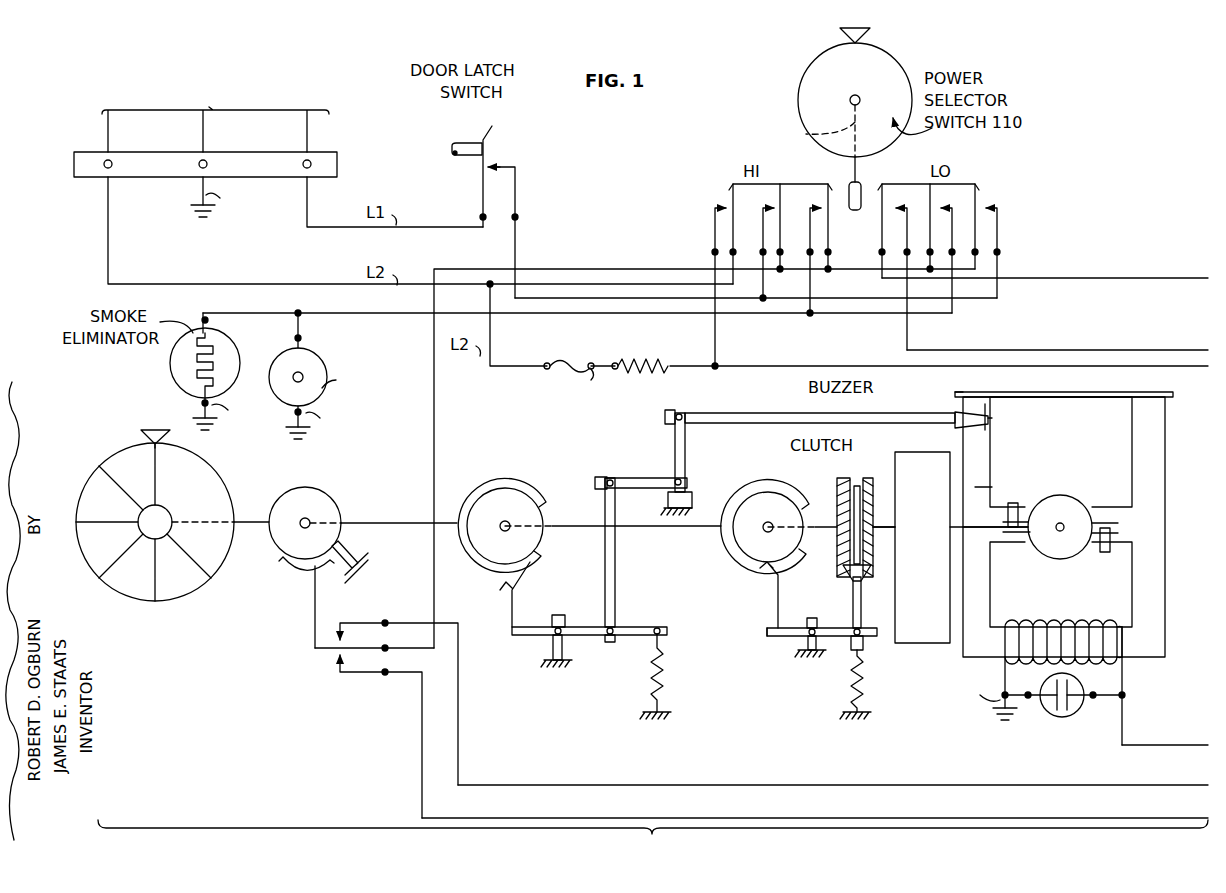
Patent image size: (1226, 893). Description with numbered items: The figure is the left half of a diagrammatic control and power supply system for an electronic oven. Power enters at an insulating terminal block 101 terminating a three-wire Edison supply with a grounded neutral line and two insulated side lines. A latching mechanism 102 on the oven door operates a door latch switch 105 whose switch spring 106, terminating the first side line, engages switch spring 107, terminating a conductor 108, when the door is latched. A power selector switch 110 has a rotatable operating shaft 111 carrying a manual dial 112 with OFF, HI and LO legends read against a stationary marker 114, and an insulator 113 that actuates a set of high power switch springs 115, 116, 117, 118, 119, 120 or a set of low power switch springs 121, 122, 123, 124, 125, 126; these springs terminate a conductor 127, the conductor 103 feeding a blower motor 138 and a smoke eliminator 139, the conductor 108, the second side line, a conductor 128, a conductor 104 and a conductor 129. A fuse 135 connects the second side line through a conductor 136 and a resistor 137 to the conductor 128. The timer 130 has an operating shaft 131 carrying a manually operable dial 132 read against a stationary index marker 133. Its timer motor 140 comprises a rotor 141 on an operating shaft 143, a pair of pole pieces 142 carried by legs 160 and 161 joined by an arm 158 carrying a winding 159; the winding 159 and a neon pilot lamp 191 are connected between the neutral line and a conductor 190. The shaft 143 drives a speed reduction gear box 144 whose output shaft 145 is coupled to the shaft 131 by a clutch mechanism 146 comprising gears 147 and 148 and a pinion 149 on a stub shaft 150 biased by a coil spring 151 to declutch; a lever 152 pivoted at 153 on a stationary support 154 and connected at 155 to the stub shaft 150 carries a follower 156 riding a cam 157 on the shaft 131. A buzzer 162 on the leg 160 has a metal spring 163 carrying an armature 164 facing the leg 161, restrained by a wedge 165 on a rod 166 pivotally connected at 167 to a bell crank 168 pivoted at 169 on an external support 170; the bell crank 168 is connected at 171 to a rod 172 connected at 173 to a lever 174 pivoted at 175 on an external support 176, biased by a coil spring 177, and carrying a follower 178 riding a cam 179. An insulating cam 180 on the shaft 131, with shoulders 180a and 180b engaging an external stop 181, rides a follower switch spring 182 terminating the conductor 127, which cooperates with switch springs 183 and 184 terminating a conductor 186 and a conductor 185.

The insulating terminal block 101 is at (74, 165).
The latching mechanism 102 is at (454, 144).
The conductor 103 is at (388, 313).
The conductor 104 is at (1128, 279).
The door latch switch 105 is at (492, 152).
The switch spring 106 is at (483, 195).
The switch spring 107 is at (516, 205).
The conductor 108 is at (516, 255).
The power selector switch 110 is at (849, 115).
The rotatable operating shaft 111 is at (806, 134).
The manual dial 112 is at (815, 63).
The insulator 113 is at (848, 190).
The stationary marker 114 is at (872, 30).
The high power switch spring 115 is at (836, 226).
The high power switch spring 116 is at (818, 260).
The high power switch spring 117 is at (788, 226).
The high power switch spring 118 is at (771, 254).
The high power switch spring 119 is at (741, 234).
The high power switch spring 120 is at (723, 287).
The low power switch spring 121 is at (890, 231).
The low power switch spring 122 is at (911, 279).
The low power switch spring 123 is at (938, 226).
The low power switch spring 124 is at (956, 260).
The low power switch spring 125 is at (983, 226).
The low power switch spring 126 is at (1001, 253).
The conductor 127 is at (860, 271).
The conductor 128 is at (1135, 367).
The conductor 129 is at (1128, 350).
The timer 130 is at (653, 840).
The operating shaft 131 is at (258, 520).
The manually operable dial 132 is at (182, 483).
The stationary index marker 133 is at (142, 430).
The fuse 135 is at (558, 360).
The conductor 136 is at (596, 375).
The resistor 137 is at (656, 360).
The blower motor 138 is at (288, 355).
The smoke eliminator 139 is at (180, 362).
The timer motor 140 is at (1047, 530).
The rotor 141 is at (1074, 500).
The pole pieces 142 is at (1013, 542).
The operating shaft 143 is at (975, 540).
The speed reduction gear box 144 is at (905, 645).
The output shaft 145 is at (884, 520).
The clutch mechanism 146 is at (868, 466).
The gear 147 is at (838, 484).
The gear 148 is at (854, 512).
The pinion 149 is at (846, 576).
The stub shaft 150 is at (862, 590).
The coil spring 151 is at (862, 686).
The lever 152 is at (776, 620).
The pivot 153 is at (826, 616).
The stationary support 154 is at (800, 640).
The pivotal connection 155 is at (866, 640).
The follower 156 is at (776, 590).
The cam 157 is at (770, 478).
The arm 158 is at (986, 645).
The winding 159 is at (1100, 627).
The leg 160 is at (1165, 474).
The leg 161 is at (1002, 486).
The buzzer 162 is at (958, 381).
The metal spring 163 is at (1063, 392).
The armature 164 is at (989, 408).
The wedge 165 is at (960, 414).
The rod 166 is at (708, 414).
The pivotal connection 167 is at (672, 414).
The bell crank 168 is at (636, 480).
The pivot 169 is at (680, 480).
The external support 170 is at (688, 496).
The pivotal connection 171 is at (610, 470).
The rod 172 is at (612, 573).
The pivotal connection 173 is at (614, 630).
The lever 174 is at (535, 618).
The pivotal connection 175 is at (562, 630).
The external support 176 is at (553, 648).
The coil spring 177 is at (663, 672).
The follower 178 is at (518, 600).
The cam 179 is at (512, 482).
The insulating cam 180 is at (308, 488).
The shoulder 180a is at (347, 555).
The shoulder 180b is at (285, 560).
The external stop 181 is at (350, 570).
The follower switch spring 182 is at (375, 648).
The switch spring 183 is at (375, 622).
The switch spring 184 is at (377, 672).
The conductor 185 is at (472, 818).
The conductor 186 is at (472, 785).
The conductor 190 is at (1136, 745).
The pilot lamp 191 is at (1052, 714).